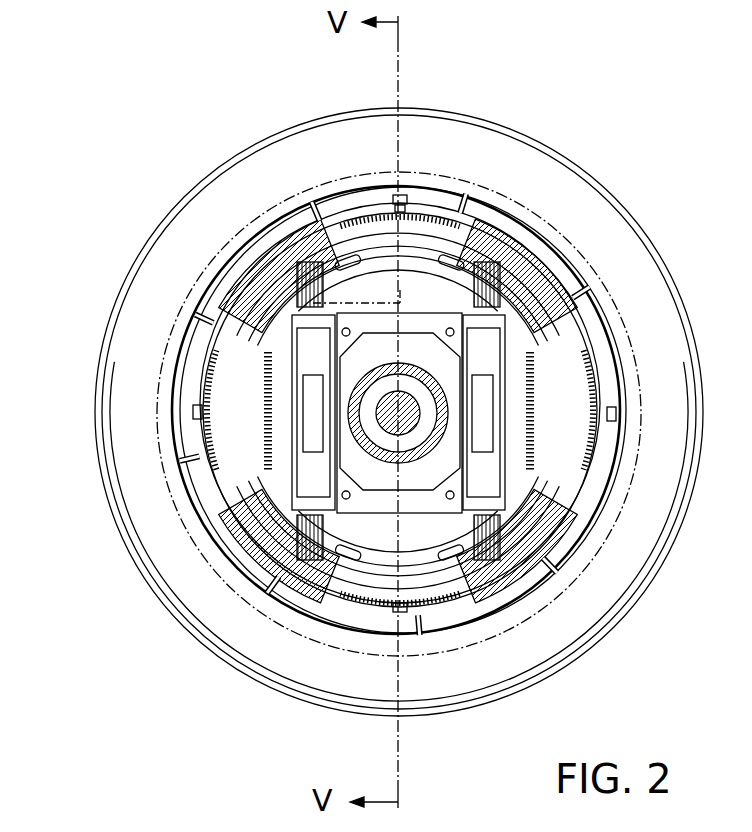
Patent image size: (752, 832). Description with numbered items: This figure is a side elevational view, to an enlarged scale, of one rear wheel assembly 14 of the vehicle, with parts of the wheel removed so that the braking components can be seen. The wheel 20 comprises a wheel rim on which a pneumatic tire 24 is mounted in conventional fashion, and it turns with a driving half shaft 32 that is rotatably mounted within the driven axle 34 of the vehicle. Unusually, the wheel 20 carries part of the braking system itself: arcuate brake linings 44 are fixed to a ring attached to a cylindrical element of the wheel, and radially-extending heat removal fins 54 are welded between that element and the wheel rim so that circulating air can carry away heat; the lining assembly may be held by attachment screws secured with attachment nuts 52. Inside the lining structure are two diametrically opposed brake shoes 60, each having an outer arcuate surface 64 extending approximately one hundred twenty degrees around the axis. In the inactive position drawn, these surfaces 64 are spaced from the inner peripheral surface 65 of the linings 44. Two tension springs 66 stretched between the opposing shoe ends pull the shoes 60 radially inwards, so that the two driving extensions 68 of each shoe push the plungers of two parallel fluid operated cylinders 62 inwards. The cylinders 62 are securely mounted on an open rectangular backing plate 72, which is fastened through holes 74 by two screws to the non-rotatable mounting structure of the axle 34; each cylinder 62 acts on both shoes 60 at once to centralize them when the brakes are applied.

The wheel assembly 14 is at (712, 228).
The wheel 20 is at (664, 140).
The pneumatic tire 24 is at (245, 160).
The driving half shaft 32 is at (377, 413).
The driven axle 34 is at (376, 412).
The brake linings 44 is at (267, 273).
The attachment nuts 52 is at (403, 197).
The heat removal fins 54 is at (622, 410).
The brake shoes 60 is at (257, 327).
The fluid operated cylinders 62 is at (312, 397).
The outer arcuate surface 64 is at (490, 563).
The inner peripheral surface 65 is at (335, 233).
The tension springs 66 is at (268, 363).
The driving extensions 68 is at (320, 333).
The backing plate 72 is at (380, 510).
The holes 74 is at (347, 328).